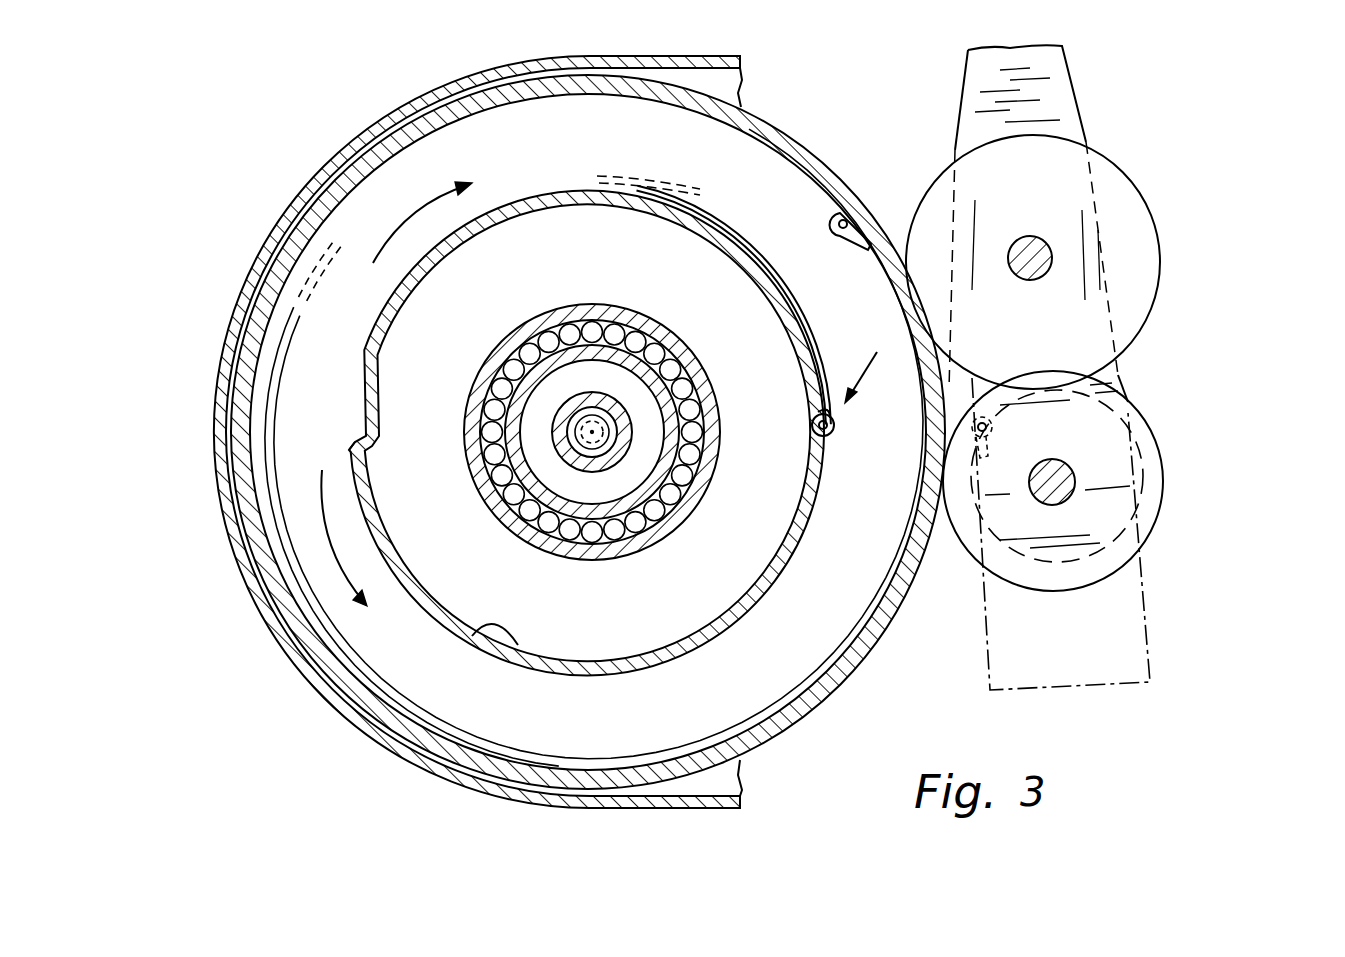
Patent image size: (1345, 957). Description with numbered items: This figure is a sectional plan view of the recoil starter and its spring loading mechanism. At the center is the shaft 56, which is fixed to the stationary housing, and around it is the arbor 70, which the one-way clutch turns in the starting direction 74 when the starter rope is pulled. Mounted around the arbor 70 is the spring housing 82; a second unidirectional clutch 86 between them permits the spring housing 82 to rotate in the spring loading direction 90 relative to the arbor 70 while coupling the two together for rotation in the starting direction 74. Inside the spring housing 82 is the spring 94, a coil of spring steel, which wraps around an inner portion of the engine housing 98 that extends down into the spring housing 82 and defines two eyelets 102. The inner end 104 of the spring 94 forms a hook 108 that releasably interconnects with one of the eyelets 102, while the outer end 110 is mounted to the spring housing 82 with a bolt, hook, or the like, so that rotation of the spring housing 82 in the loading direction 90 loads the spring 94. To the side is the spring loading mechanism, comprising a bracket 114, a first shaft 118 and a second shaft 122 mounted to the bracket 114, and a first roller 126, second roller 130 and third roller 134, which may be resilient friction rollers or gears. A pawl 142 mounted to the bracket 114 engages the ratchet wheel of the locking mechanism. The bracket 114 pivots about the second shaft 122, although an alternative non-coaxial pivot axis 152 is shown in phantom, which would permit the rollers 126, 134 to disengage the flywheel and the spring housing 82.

The shaft 56 is at (598, 446).
The arbor 70 is at (638, 366).
The starting direction 74 is at (413, 218).
The spring housing 82 is at (852, 662).
The second unidirectional clutch 86 is at (628, 543).
The spring loading direction 90 is at (335, 526).
The spring 94 is at (706, 194).
The engine housing 98 is at (214, 414).
The eyelets 102 is at (370, 432).
The inner end 104 is at (870, 363).
The hook 108 is at (835, 429).
The outer end 110 is at (834, 221).
The bracket 114 is at (1040, 90).
The first shaft 118 is at (1036, 240).
The second shaft 122 is at (1066, 470).
The first roller 126 is at (1145, 243).
The second roller 130 is at (1148, 498).
The third roller 134 is at (1057, 476).
The pawl 142 is at (963, 388).
The pivot axis 152 is at (1092, 634).